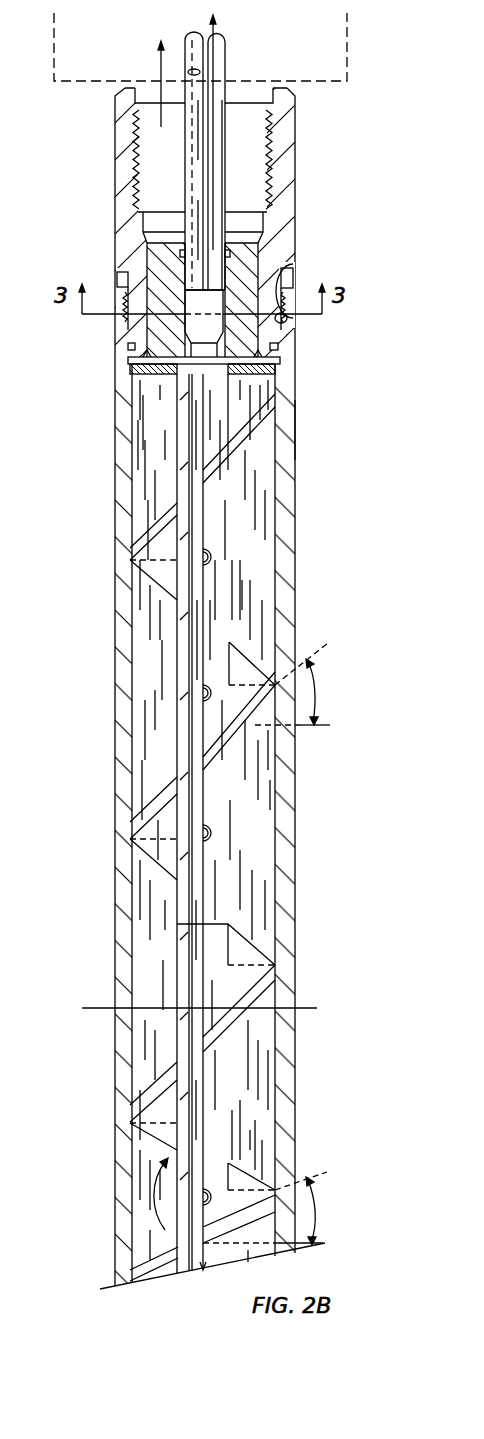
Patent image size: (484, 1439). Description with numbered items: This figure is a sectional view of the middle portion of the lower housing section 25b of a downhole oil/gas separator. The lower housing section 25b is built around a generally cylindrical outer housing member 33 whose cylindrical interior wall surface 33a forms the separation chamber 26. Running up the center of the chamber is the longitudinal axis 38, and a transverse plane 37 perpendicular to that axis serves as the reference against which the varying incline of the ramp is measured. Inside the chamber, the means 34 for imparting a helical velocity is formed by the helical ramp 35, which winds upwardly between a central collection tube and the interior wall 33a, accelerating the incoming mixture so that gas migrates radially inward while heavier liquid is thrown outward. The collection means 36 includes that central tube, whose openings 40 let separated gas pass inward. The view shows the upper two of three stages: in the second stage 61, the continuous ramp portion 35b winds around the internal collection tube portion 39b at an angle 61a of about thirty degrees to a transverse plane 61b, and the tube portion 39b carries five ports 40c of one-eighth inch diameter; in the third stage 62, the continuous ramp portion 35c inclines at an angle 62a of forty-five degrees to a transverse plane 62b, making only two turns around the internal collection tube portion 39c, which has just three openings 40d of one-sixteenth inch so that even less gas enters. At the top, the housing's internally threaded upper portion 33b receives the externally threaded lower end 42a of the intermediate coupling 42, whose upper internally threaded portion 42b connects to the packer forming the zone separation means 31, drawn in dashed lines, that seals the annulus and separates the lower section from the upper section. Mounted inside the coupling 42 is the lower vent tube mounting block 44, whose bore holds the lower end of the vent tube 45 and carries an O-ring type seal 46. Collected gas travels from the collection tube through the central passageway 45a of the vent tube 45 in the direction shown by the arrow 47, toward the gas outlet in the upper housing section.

The lower housing section 25b is at (305, 430).
The separation chamber 26 is at (258, 1045).
The zone separation means (packer) 31 is at (347, 48).
The outer housing member 33 is at (283, 600).
The cylindrical interior wall surface 33a is at (272, 794).
The internally threaded upper portion 33b is at (287, 320).
The means for imparting a helical velocity 34 is at (151, 798).
The helical ramp 35 is at (255, 942).
The continuous ramp portion (second stage) 35b is at (245, 1180).
The continuous ramp portion (third stage) 35c is at (250, 662).
The collection means 36 is at (229, 506).
The transverse plane 37 is at (317, 1008).
The longitudinal axis 38 is at (198, 405).
The internal collection tube portion (second stage) 39b is at (215, 1140).
The internal collection tube portion (third stage) 39c is at (217, 593).
The openings 40 is at (213, 832).
The ports 40c is at (206, 1195).
The openings (third stage) 40d is at (208, 692).
The intermediate coupling 42 is at (287, 228).
The externally threaded lower end 42a is at (293, 264).
The upper internally threaded portion 42b is at (248, 147).
The lower vent tube mounting block 44 is at (150, 248).
The vent tube 45 is at (186, 52).
The central passageway 45a is at (190, 73).
The O-ring type seal 46 is at (180, 253).
The arrow 47 is at (216, 22).
The second stage 61 is at (100, 1165).
The angle of incline (second stage) 61a is at (327, 1220).
The transverse plane (second stage) 61b is at (318, 1244).
The third stage 62 is at (152, 523).
The angle of incline (third stage) 62a is at (324, 696).
The transverse plane (third stage) 62b is at (314, 727).